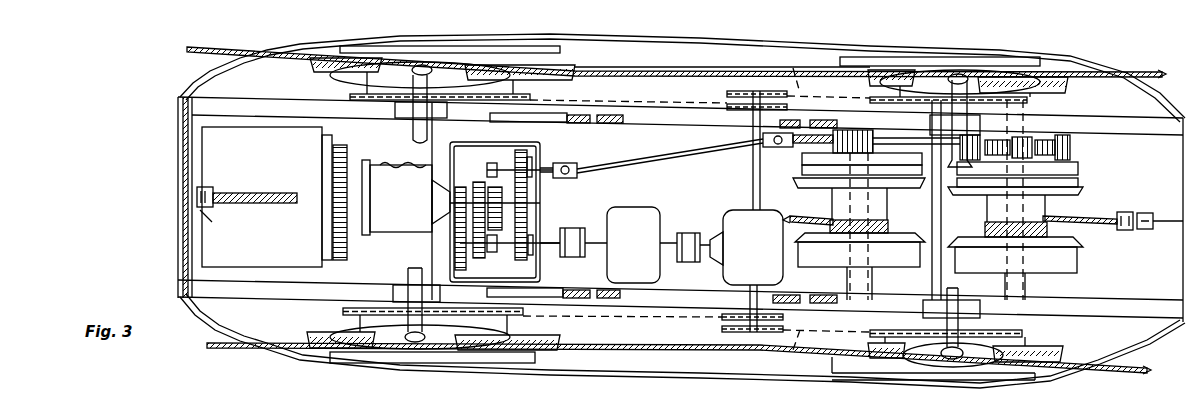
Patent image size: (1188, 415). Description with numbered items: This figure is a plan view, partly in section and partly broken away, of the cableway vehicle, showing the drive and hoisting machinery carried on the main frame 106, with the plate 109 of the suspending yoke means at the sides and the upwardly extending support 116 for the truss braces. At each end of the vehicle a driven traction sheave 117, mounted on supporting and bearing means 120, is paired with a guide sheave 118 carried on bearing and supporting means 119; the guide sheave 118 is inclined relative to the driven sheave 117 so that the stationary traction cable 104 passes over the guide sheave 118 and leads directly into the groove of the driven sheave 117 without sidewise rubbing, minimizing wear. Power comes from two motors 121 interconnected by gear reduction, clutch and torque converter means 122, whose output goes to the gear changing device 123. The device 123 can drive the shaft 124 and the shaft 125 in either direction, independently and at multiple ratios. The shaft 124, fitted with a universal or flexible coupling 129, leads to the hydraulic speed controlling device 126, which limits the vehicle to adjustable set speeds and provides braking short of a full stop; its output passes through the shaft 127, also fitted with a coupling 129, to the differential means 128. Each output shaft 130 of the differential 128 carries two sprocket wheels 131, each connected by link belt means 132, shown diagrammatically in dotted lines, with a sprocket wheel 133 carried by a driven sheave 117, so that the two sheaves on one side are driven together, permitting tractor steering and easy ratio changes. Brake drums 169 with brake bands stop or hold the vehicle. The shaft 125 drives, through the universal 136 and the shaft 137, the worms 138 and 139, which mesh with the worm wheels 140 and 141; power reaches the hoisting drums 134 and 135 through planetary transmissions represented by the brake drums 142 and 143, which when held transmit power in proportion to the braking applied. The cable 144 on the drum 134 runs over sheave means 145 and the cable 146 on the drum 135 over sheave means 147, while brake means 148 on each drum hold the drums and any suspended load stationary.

The traction cable 104 is at (244, 40).
The main frame 106 is at (263, 107).
The plate 109 is at (178, 257).
The support 116 is at (607, 123).
The driven traction sheave 117 is at (560, 66).
The guide sheave 118 is at (428, 52).
The bearing and supporting means 119 is at (417, 127).
The supporting and bearing means 120 is at (432, 252).
The motor 121 is at (212, 175).
The gear reduction, clutch and torque converter means 122 is at (385, 152).
The gear changing device 123 is at (502, 140).
The shaft 124 is at (600, 250).
The shaft 125 is at (547, 175).
The hydraulic speed controlling device 126 is at (638, 210).
The shaft 127 is at (667, 247).
The differential means 128 is at (737, 218).
The universal or flexible coupling 129 is at (578, 233).
The output shaft 130 is at (752, 185).
The sprocket wheel 131 is at (727, 97).
The link belt means 132 is at (793, 68).
The sprocket wheel 133 is at (352, 95).
The hoisting drum 134 is at (837, 200).
The hoisting drum 135 is at (1040, 207).
The universal 136 is at (567, 165).
The shaft 137 is at (647, 153).
The worm 138 is at (857, 153).
The worm 139 is at (1033, 137).
The worm wheel 140 is at (907, 148).
The worm wheel 141 is at (1073, 148).
The brake drum 142 is at (807, 162).
The brake drum 143 is at (1073, 165).
The cable 144 is at (287, 200).
The sheave means 145 is at (230, 192).
The cable 146 is at (1097, 225).
The sheave means 147 is at (1130, 233).
The brake means 148 is at (900, 262).
The brake drum 169 is at (540, 50).